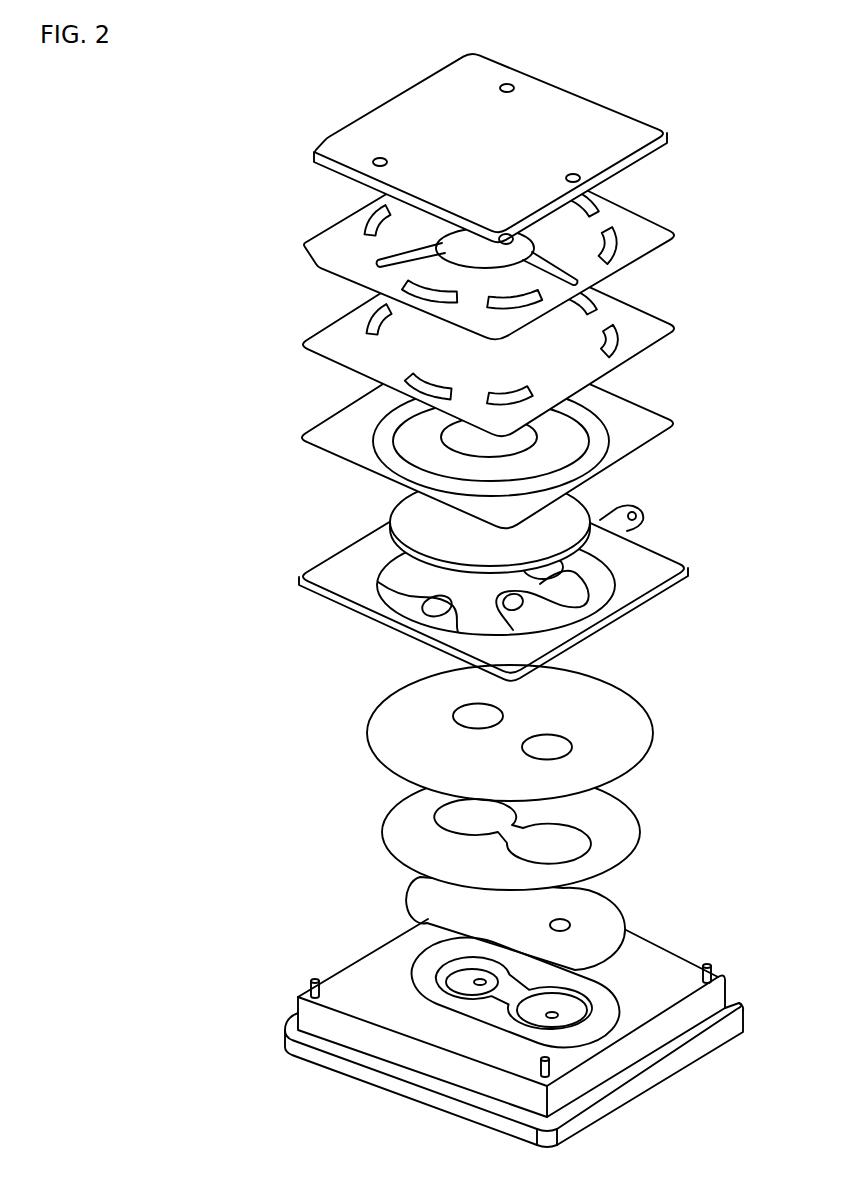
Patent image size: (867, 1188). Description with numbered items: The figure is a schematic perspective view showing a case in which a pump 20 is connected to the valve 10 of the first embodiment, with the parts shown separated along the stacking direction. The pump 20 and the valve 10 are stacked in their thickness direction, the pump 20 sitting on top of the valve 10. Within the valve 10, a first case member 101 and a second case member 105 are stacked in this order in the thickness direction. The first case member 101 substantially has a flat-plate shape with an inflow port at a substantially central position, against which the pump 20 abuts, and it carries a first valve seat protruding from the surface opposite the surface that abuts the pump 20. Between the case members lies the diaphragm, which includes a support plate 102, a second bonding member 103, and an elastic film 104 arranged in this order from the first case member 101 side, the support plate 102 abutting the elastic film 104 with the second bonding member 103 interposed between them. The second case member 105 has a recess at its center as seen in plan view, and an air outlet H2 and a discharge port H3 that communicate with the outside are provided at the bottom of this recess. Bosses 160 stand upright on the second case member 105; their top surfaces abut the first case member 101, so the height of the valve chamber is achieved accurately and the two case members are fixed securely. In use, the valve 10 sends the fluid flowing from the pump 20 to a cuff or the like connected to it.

The pump 20 is at (726, 75).
The valve 10 is at (730, 540).
The first case member 101 is at (333, 573).
The support plate 102 is at (388, 732).
The second bonding member 103 is at (402, 832).
The elastic film 104 is at (420, 898).
The second case member 105 is at (380, 967).
The boss 160 is at (311, 985).
The air outlet H2 is at (480, 985).
The discharge port H3 is at (553, 1018).